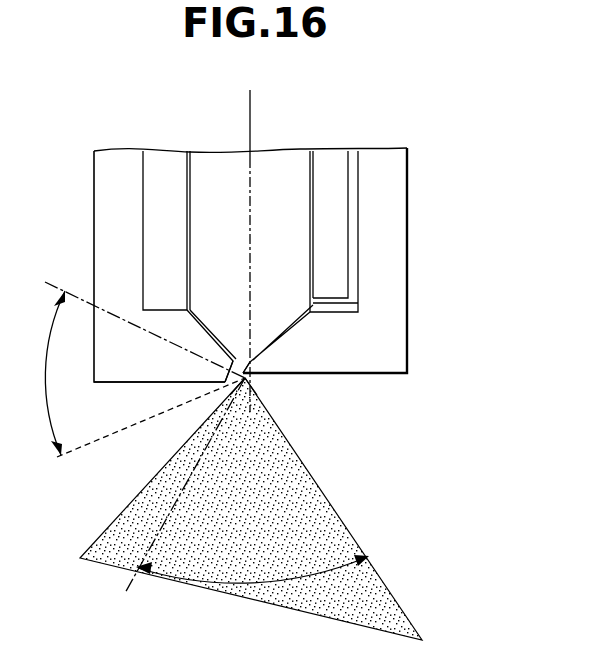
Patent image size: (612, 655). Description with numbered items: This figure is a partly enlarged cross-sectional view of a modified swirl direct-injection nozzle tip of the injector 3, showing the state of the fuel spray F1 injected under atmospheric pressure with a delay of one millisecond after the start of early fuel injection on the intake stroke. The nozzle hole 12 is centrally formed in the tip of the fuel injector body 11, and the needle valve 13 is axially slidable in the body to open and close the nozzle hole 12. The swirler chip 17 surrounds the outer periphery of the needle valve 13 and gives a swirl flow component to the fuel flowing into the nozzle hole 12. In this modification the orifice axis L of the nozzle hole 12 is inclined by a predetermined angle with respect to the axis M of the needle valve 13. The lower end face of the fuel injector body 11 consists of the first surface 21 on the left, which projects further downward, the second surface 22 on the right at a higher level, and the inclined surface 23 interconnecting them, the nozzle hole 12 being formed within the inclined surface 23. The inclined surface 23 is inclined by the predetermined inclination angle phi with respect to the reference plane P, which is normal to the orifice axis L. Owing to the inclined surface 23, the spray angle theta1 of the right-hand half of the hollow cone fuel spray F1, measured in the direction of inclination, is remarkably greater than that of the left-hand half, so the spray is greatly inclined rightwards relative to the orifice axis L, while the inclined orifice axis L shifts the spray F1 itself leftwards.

The injector 3 is at (414, 210).
The fuel injector body 11 is at (387, 197).
The nozzle hole 12 is at (258, 365).
The needle valve 13 is at (280, 165).
The swirler chip 17 is at (333, 270).
The first surface 21 is at (148, 383).
The second surface 22 is at (392, 374).
The inclined surface 23 is at (253, 383).
The fuel spray F1 is at (293, 463).
The axis of needle valve M is at (250, 118).
The reference plane P is at (145, 303).
The orifice axis L is at (183, 485).
The inclination angle phi is at (46, 373).
The spray angle theta1 is at (252, 566).